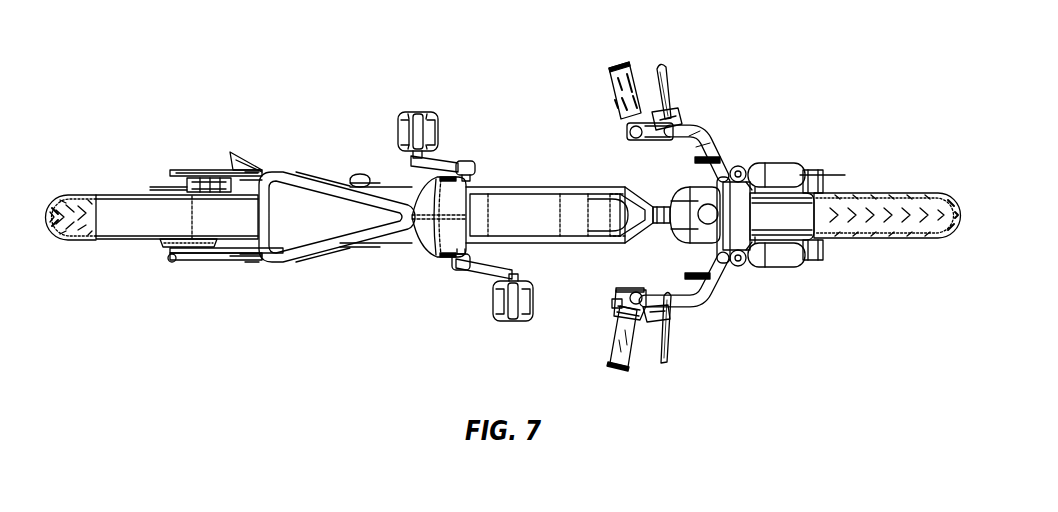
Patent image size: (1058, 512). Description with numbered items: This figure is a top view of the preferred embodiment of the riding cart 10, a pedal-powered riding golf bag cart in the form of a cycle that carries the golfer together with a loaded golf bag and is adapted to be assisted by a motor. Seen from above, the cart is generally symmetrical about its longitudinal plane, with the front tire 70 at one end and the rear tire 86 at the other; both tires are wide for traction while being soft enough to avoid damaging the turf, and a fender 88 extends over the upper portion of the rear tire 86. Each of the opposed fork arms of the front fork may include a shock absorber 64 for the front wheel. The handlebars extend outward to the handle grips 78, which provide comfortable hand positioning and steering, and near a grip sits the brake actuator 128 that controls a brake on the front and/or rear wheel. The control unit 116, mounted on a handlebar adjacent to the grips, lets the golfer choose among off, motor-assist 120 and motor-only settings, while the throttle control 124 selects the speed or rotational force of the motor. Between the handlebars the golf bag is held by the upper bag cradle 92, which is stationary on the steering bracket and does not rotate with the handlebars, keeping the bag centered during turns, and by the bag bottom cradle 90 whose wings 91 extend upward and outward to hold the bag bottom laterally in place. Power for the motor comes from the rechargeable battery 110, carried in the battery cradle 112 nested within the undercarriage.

The riding cart 10 is at (520, 42).
The shock absorber 64 is at (783, 262).
The front tire 70 is at (930, 195).
The handle grips 78 is at (628, 96).
The rear tire 86 is at (68, 197).
The fender 88 is at (151, 228).
The bag bottom cradle 90 is at (452, 213).
The wings 91 is at (447, 257).
The upper bag cradle 92 is at (730, 266).
The battery 110 is at (559, 228).
The battery cradle 112 is at (510, 207).
The control unit 116 is at (638, 292).
The motor-assist 120 is at (616, 320).
The throttle control 124 is at (628, 337).
The brake actuator 128 is at (668, 360).